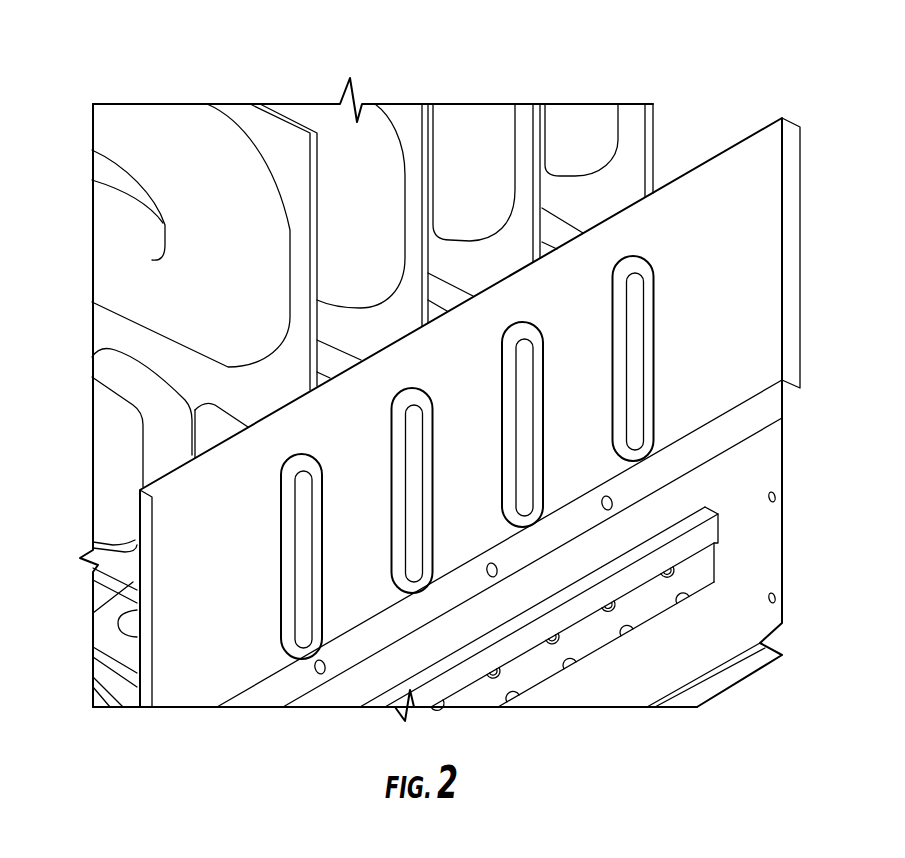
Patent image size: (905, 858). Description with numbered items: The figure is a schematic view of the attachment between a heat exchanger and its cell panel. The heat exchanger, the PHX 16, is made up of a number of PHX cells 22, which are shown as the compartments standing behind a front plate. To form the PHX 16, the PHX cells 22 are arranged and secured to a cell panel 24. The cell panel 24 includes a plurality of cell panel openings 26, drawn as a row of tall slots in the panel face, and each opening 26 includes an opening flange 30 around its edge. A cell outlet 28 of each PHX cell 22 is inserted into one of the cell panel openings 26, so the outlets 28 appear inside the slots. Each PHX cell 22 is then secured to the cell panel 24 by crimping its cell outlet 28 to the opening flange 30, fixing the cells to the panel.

The PHX 16 is at (173, 91).
The PHX cell 22 is at (243, 279).
The cell panel 24 is at (200, 594).
The cell panel opening 26 is at (625, 262).
The cell outlet 28 is at (640, 350).
The opening flange 30 is at (283, 482).